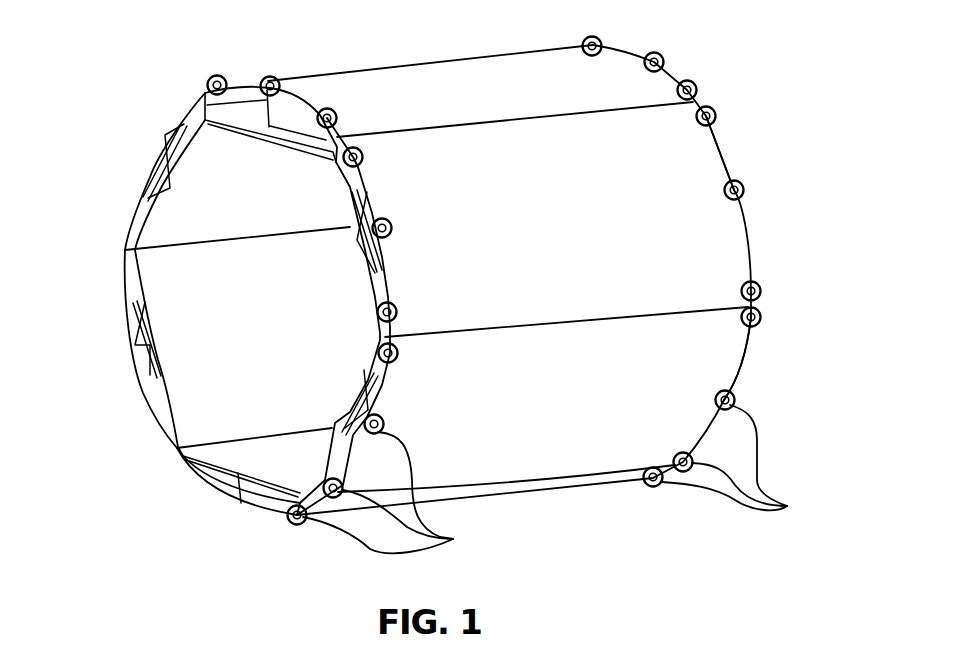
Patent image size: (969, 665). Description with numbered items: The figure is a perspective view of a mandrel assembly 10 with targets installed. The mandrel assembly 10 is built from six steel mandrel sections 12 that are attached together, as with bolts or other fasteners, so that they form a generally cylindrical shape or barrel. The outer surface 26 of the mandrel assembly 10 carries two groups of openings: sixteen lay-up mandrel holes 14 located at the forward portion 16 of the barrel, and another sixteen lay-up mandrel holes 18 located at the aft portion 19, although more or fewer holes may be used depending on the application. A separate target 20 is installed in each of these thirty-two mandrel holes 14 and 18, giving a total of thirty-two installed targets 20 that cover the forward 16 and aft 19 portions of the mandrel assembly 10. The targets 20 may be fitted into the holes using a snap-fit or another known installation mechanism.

The mandrel assembly 10 is at (770, 108).
The mandrel sections 12 is at (407, 80).
The lay-up mandrel holes 14 is at (446, 538).
The forward portion 16 is at (185, 465).
The lay-up mandrel holes 18 is at (787, 507).
The aft portion 19 is at (742, 370).
The target 20 is at (760, 316).
The outer surface 26 is at (717, 225).